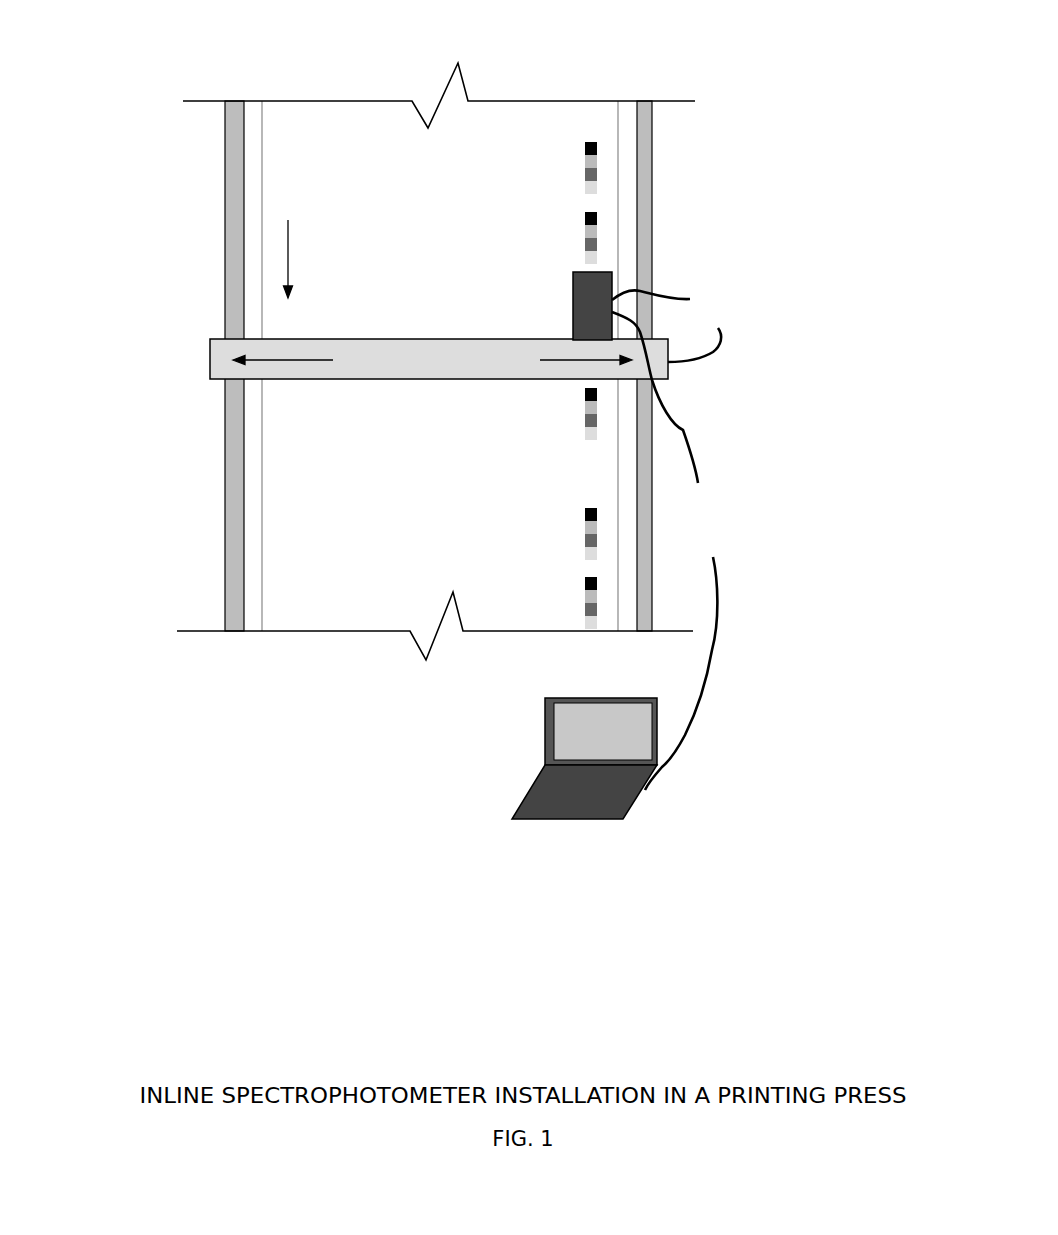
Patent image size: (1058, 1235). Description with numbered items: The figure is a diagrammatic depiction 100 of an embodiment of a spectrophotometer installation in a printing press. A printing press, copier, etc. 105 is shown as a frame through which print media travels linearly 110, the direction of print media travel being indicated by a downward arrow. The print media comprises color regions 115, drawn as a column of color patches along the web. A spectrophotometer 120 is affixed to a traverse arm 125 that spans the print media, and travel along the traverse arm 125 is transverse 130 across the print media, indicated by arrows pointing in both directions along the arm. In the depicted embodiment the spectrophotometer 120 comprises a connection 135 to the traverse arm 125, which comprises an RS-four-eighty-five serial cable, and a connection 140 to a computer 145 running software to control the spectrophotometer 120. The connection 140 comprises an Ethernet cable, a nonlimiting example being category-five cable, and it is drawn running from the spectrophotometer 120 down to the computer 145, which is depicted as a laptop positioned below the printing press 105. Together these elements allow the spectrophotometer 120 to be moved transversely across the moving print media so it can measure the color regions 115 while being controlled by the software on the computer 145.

The diagrammatic depiction 100 is at (65, 24).
The printing press, copier, etc. 105 is at (665, 161).
The print media traveling linearly 110 is at (298, 205).
The color regions 115 is at (571, 224).
The spectrophotometer 120 is at (560, 298).
The traverse arm 125 is at (197, 331).
The transverse travel 130 is at (432, 379).
The connection 135 is at (683, 283).
The connection 140 is at (682, 551).
The computer 145 is at (530, 742).